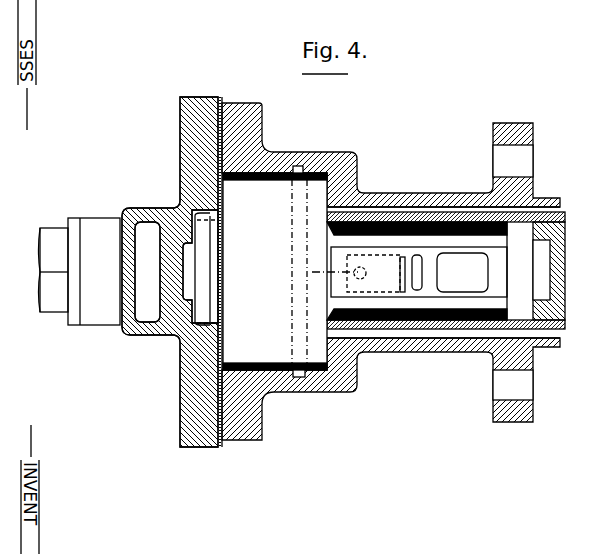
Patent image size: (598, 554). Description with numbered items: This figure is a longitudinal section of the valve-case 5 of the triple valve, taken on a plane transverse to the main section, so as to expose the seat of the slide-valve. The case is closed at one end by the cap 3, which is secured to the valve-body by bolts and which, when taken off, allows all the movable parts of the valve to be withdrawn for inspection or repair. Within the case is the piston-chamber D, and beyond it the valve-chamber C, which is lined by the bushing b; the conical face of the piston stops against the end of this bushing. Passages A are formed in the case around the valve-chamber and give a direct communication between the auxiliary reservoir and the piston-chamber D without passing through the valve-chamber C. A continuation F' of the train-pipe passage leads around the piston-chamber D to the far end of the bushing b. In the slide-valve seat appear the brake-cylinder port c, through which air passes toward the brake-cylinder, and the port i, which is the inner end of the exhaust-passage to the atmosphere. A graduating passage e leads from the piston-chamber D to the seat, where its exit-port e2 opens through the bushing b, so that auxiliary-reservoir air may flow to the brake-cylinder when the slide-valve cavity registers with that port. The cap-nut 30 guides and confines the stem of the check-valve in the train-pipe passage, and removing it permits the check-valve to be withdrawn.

The cap 3 is at (180, 107).
The cap-nut 30 is at (52, 249).
The valve-case 5 is at (415, 187).
The passages A is at (448, 213).
The bushing b is at (330, 231).
The valve-chamber C is at (409, 267).
The slide-valve port c is at (470, 263).
The piston-chamber D is at (275, 271).
The graduating passage e is at (298, 167).
The exit-port e2 is at (402, 262).
The passage continuation F' is at (176, 269).
The exhaust port i is at (419, 287).